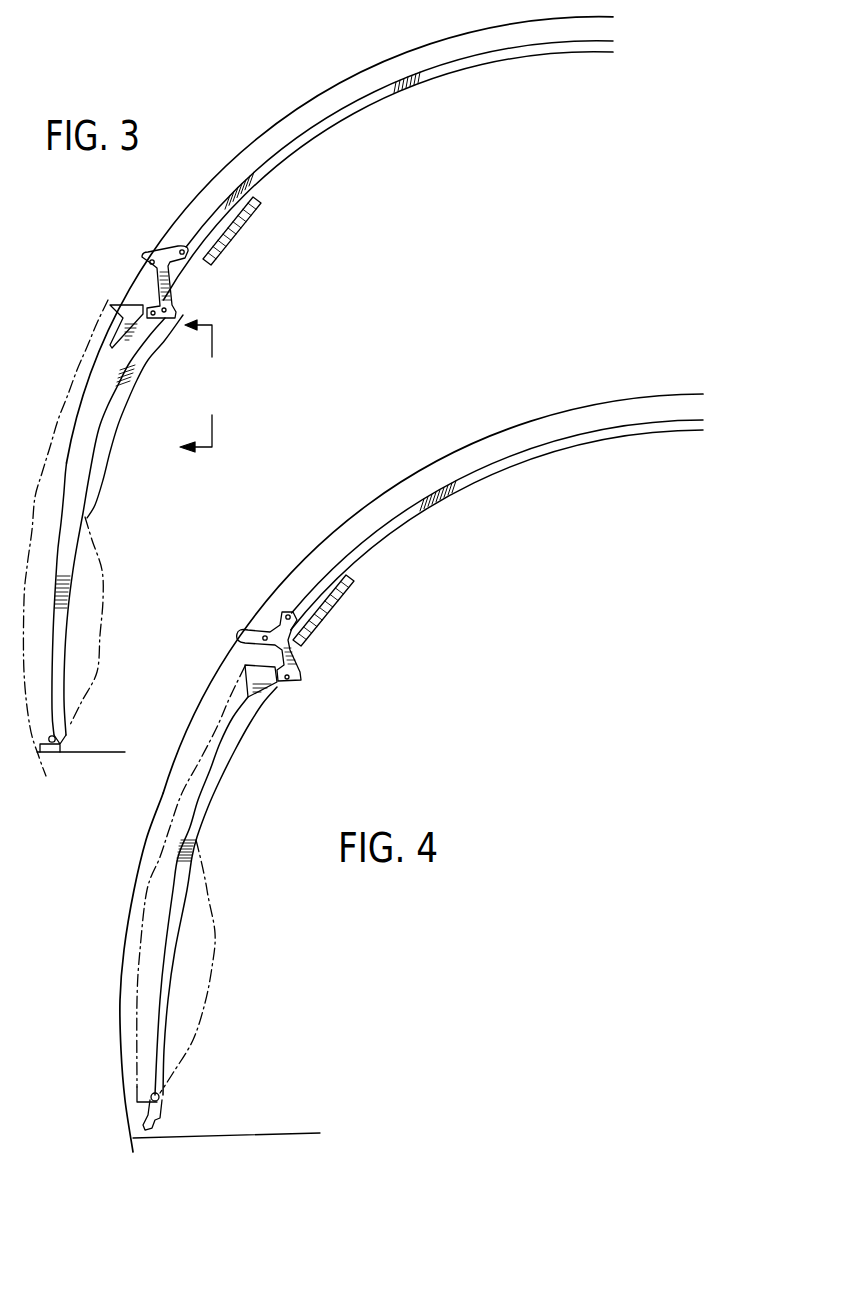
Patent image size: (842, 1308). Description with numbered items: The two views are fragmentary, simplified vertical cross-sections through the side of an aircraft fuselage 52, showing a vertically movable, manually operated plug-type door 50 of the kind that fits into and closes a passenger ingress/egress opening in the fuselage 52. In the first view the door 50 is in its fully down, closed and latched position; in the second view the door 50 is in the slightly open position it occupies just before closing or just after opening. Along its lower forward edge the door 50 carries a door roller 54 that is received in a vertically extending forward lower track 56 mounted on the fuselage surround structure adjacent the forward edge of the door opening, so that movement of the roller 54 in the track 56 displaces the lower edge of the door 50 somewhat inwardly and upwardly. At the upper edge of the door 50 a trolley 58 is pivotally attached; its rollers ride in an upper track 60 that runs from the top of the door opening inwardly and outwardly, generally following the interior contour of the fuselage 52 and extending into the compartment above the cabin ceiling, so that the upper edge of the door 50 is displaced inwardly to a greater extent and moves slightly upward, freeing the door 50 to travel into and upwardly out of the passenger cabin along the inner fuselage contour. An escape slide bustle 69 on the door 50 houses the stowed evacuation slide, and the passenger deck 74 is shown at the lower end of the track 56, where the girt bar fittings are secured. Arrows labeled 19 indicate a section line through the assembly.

In FIG. 3, the plug-type door 50 is at (73, 405).
In FIG. 4, the plug-type door 50 is at (153, 890).
In FIG. 3, the fuselage 52 is at (277, 132).
In FIG. 4, the fuselage 52 is at (422, 478).
In FIG. 3, the door roller 54 is at (56, 753).
In FIG. 4, the door roller 54 is at (160, 1095).
In FIG. 3, the forward lower track 56 is at (190, 282).
In FIG. 4, the forward lower track 56 is at (200, 793).
In FIG. 3, the trolley 58 is at (172, 316).
In FIG. 4, the trolley 58 is at (299, 667).
In FIG. 3, the upper track 60 is at (333, 127).
In FIG. 4, the upper track 60 is at (480, 483).
In FIG. 3, the escape slide bustle 69 is at (102, 631).
In FIG. 4, the escape slide bustle 69 is at (205, 1005).
In FIG. 3, the passenger deck 74 is at (98, 752).
In FIG. 4, the passenger deck 74 is at (258, 1133).
In FIG. 3, the section line 19- 19 is at (196, 387).